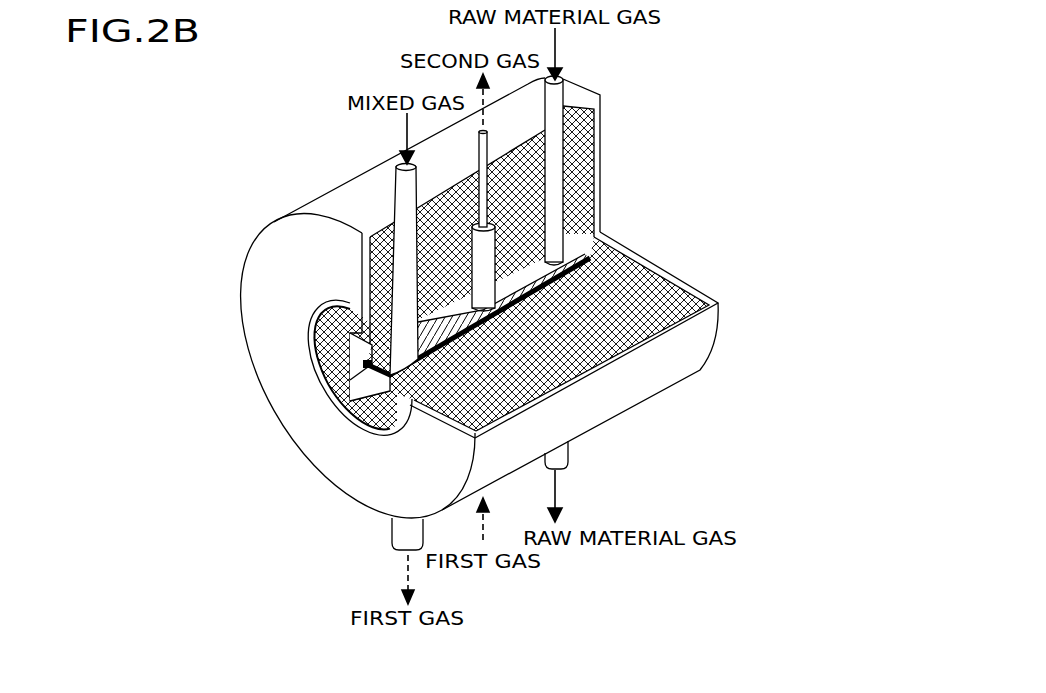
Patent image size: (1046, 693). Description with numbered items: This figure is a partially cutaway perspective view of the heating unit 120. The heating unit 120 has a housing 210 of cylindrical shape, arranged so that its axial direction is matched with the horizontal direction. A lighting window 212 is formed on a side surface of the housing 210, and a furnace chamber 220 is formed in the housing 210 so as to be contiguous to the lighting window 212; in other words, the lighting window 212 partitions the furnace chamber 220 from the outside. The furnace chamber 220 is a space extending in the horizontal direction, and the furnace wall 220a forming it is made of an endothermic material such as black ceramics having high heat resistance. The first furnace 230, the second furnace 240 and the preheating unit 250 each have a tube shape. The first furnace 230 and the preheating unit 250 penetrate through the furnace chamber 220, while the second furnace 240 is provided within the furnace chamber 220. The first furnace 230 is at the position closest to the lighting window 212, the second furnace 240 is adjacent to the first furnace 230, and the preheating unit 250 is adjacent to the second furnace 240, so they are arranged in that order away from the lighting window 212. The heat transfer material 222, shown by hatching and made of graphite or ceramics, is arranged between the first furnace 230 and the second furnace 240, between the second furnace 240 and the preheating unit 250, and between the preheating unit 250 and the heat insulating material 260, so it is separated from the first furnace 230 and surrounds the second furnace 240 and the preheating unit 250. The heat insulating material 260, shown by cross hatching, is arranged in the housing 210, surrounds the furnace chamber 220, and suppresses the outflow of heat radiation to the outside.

The heating unit 120 is at (451, 292).
The housing 210 is at (273, 350).
The lighting window 212 is at (360, 370).
The furnace chamber 220 is at (273, 346).
The furnace wall 220a is at (330, 341).
The heat transfer material 222 is at (425, 338).
The first furnace 230 is at (398, 184).
The second furnace 240 is at (490, 291).
The preheating unit 250 is at (563, 142).
The heat insulating material 260 is at (580, 193).